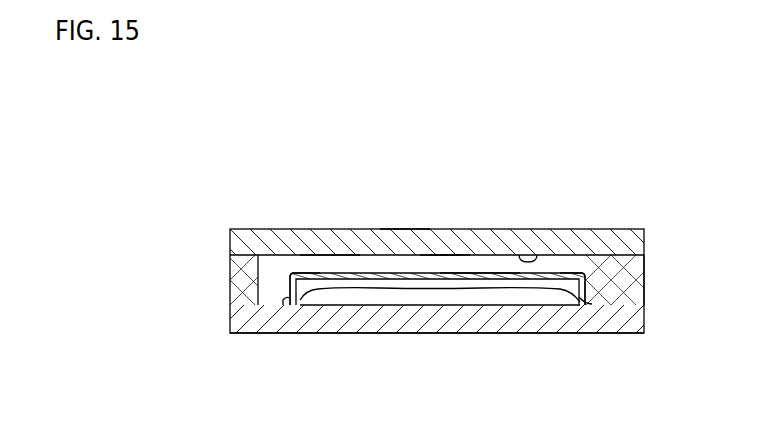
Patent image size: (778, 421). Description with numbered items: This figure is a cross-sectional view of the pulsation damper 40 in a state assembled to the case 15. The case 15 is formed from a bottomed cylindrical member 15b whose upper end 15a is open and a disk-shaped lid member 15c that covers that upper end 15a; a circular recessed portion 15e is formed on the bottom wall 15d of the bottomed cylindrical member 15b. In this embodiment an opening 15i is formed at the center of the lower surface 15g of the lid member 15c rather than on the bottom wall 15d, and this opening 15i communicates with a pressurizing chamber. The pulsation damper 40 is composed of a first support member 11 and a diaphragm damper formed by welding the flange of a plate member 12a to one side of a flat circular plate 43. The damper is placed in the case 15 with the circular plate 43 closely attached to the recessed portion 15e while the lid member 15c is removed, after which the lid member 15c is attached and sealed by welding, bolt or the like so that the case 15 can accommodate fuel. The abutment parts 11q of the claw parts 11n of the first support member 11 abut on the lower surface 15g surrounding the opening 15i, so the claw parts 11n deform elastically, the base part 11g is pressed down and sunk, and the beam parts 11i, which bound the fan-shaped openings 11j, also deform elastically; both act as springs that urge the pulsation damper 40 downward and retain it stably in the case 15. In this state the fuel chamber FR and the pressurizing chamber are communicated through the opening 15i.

The case 15 is at (644, 229).
The upper end 15a is at (262, 243).
The bottomed cylindrical member 15b is at (637, 291).
The lid member 15c is at (330, 240).
The bottom wall 15d is at (520, 330).
The recessed portion 15e is at (355, 312).
The lower surface 15g is at (531, 258).
The opening 15i is at (405, 248).
The first support member 11 is at (291, 296).
The beam parts 11i is at (368, 273).
The openings 11j is at (550, 273).
The abutment part 11q is at (442, 257).
The claw parts 11n is at (442, 257).
The base part 11g is at (481, 274).
The plate member 12a is at (465, 287).
The pulsation damper 40 is at (603, 293).
The circular plate 43 is at (284, 306).
The fuel chamber FR is at (598, 273).